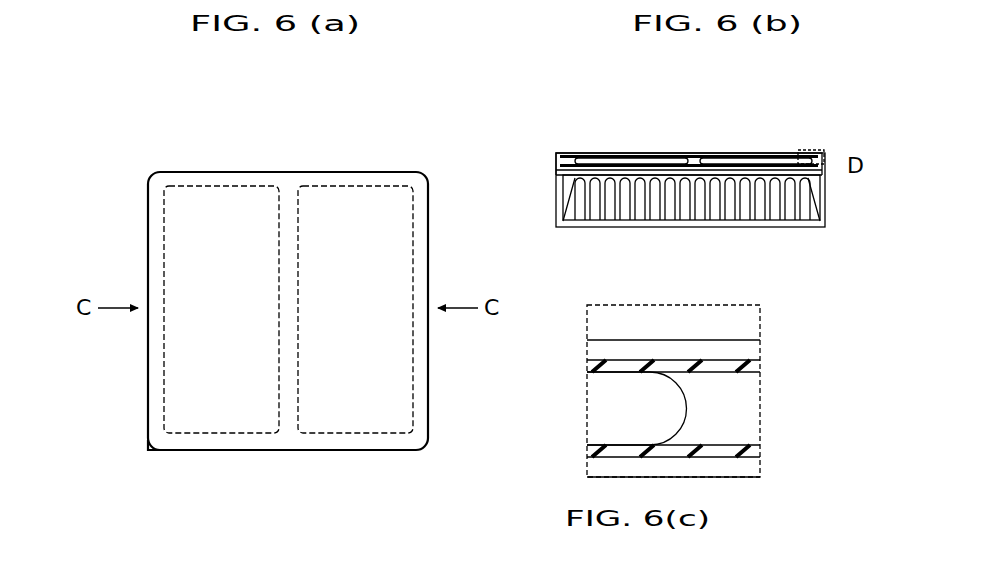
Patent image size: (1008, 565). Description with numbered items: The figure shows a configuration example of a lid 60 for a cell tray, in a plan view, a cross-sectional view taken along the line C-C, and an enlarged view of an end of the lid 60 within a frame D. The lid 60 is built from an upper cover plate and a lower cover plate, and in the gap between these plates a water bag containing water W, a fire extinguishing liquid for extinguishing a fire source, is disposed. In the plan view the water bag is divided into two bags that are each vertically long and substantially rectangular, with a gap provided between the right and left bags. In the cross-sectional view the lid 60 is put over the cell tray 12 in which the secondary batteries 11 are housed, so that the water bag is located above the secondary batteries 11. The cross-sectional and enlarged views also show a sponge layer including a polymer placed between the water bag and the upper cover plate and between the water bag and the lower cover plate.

The lid for a cell tray 60 is at (148, 87).
The secondary batteries 11 is at (598, 222).
The cell tray 12 is at (844, 199).
The water W is at (600, 410).